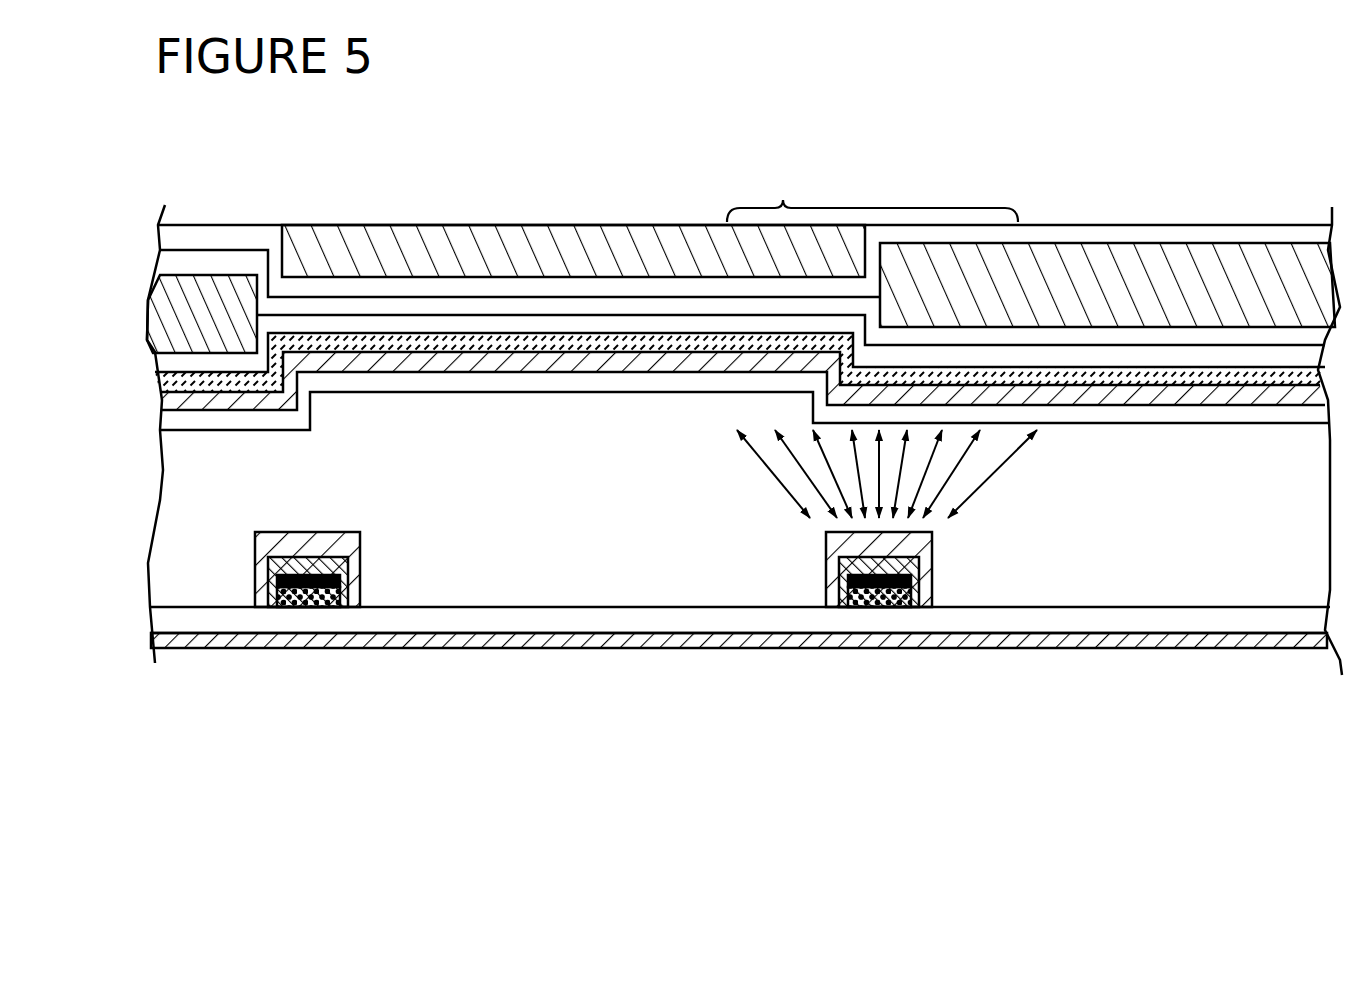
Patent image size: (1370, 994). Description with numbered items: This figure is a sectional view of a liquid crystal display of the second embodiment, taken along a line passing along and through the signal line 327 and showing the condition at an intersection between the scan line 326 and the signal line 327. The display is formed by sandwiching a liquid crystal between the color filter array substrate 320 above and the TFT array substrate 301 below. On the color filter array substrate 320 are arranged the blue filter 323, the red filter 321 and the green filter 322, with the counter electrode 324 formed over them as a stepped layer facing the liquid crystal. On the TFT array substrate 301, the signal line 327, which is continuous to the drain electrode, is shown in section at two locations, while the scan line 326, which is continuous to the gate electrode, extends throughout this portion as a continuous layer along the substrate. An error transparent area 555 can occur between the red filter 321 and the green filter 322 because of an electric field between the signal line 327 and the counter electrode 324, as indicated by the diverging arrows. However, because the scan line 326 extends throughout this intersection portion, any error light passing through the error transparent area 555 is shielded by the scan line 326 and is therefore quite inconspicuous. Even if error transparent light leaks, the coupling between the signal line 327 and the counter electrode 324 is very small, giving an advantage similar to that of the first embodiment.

The color filter array substrate 320 is at (710, 140).
The red filter 321 is at (417, 238).
The green filter 322 is at (1022, 265).
The blue filter 323 is at (200, 293).
The counter electrode 324 is at (497, 362).
The error transparent area 555 is at (845, 196).
The signal line 327 is at (350, 546).
The TFT array substrate 301 is at (372, 707).
The scan line 326 is at (950, 642).